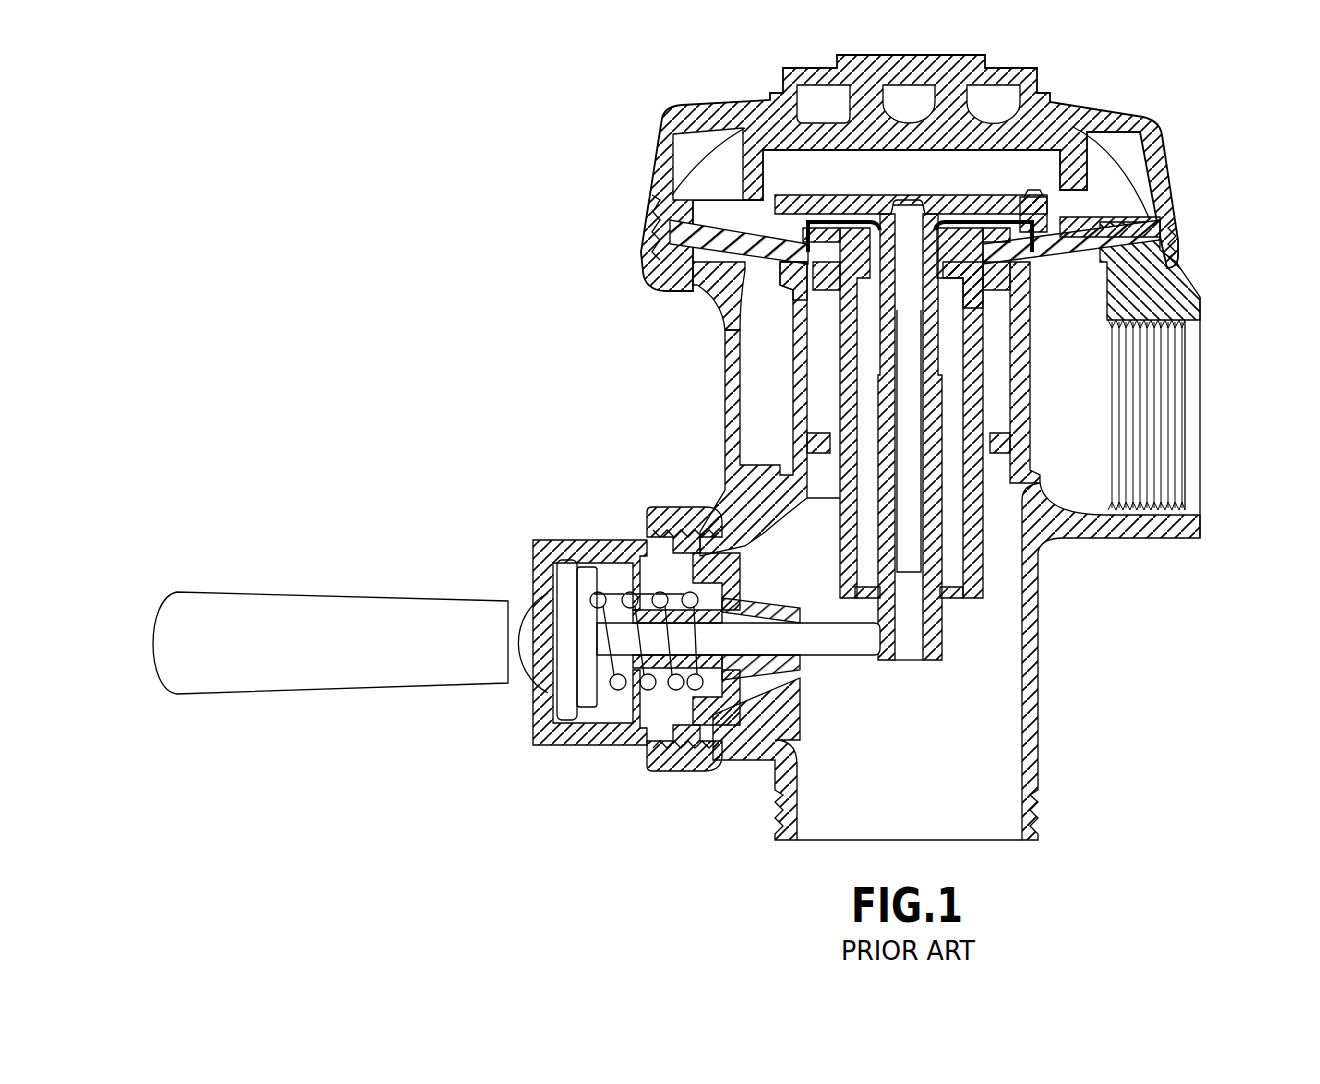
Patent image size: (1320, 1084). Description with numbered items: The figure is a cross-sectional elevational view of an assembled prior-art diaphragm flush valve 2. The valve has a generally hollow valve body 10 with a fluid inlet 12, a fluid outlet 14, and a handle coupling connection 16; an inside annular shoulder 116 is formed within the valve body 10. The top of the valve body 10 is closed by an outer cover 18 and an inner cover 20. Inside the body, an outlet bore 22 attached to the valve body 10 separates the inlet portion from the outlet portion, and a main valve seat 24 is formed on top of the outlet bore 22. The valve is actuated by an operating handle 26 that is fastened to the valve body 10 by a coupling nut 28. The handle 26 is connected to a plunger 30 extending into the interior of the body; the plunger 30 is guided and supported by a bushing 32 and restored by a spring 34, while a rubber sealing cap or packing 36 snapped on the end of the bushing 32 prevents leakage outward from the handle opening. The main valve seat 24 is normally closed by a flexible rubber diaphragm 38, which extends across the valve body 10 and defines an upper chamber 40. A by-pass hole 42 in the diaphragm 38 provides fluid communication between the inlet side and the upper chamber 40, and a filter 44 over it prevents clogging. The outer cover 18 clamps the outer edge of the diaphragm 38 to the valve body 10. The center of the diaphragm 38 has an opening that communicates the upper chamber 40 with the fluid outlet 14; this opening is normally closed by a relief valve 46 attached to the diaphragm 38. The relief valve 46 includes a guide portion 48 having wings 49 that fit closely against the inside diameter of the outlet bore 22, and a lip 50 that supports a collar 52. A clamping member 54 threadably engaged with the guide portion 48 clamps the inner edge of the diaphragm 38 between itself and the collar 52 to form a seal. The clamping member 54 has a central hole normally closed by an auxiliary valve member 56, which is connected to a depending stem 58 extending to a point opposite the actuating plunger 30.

The flush valve 2 is at (590, 182).
The valve body 10 is at (1048, 716).
The fluid inlet 12 is at (1187, 440).
The fluid outlet 14 is at (975, 828).
The handle coupling connection 16 is at (718, 725).
The outer cover 18 is at (1098, 112).
The inner cover 20 is at (1165, 147).
The outlet bore 22 is at (797, 405).
The main valve seat 24 is at (1000, 272).
The operating handle 26 is at (300, 595).
The coupling nut 28 is at (695, 772).
The plunger 30 is at (840, 650).
The bushing 32 is at (630, 725).
The spring 34 is at (634, 593).
The rubber sealing cap or packing 36 is at (782, 668).
The flexible rubber diaphragm 38 is at (1047, 240).
The upper chamber 40 is at (792, 177).
The by-pass hole 42 is at (760, 228).
The filter 44 is at (705, 300).
The relief valve 46 is at (838, 556).
The guide portion 48 is at (985, 422).
The wings 49 is at (830, 492).
The lip 50 is at (1015, 337).
The collar 52 is at (795, 288).
The clamping member 54 is at (1028, 196).
The auxiliary valve member 56 is at (866, 200).
The depending stem 58 is at (940, 650).
The inside annular shoulder 116 is at (1178, 264).